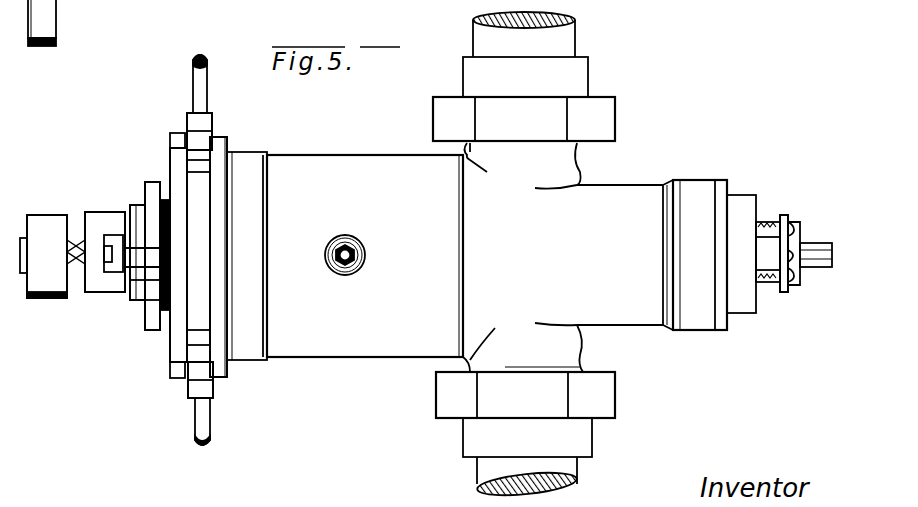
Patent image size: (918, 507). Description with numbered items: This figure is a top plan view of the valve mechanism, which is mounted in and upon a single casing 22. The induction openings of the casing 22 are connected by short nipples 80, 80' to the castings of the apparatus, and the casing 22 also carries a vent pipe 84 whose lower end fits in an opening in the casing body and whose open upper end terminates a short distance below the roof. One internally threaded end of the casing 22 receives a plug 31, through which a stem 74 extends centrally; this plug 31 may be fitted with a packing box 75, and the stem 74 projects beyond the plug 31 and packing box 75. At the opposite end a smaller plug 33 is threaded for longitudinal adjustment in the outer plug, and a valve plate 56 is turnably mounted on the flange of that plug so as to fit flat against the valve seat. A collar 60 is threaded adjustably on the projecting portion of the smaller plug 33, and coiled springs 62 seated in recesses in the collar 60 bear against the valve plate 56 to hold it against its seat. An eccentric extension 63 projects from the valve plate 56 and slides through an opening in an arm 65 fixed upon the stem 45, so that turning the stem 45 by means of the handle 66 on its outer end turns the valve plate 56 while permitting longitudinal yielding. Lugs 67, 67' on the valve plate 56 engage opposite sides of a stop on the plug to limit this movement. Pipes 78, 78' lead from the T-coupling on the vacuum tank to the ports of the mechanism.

The casing 22 is at (450, 257).
The plug 31 is at (743, 197).
The smaller plug 33 is at (130, 302).
The stem 45 is at (76, 245).
The valve plate 56 is at (172, 157).
The collar 60 is at (150, 331).
The coiled springs 62 is at (160, 213).
The extension 63 is at (162, 262).
The arm 65 is at (108, 280).
The handle 66 is at (40, 215).
The lug 67 is at (161, 122).
The lug 67' is at (153, 390).
The stem 74 is at (800, 243).
The packing box 75 is at (772, 258).
The pipe 78 is at (179, 404).
The pipe 78' is at (220, 102).
The nipple 80 is at (525, 435).
The nipple 80' is at (533, 76).
The vent pipe 84 is at (352, 250).